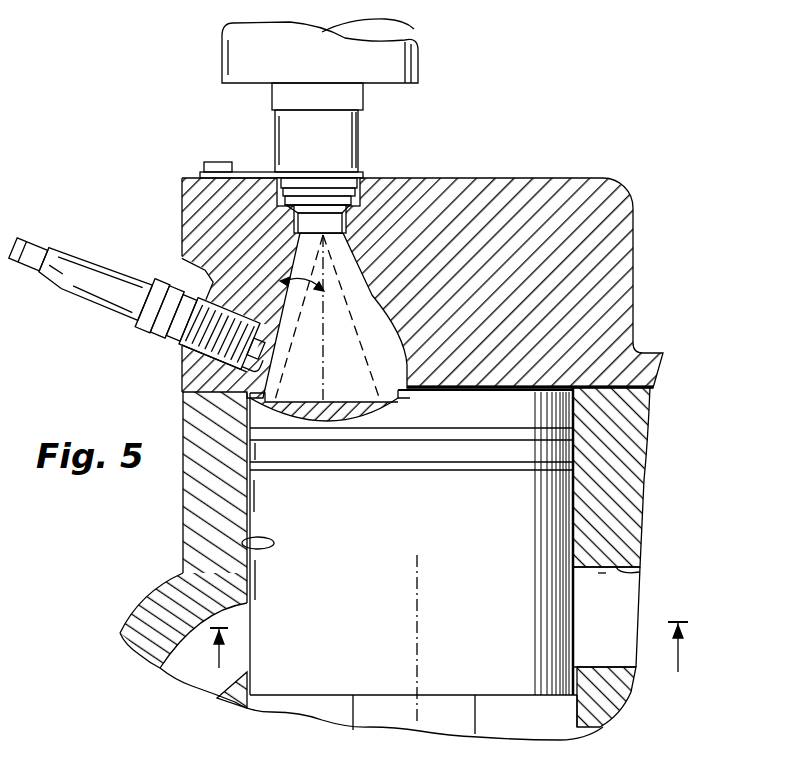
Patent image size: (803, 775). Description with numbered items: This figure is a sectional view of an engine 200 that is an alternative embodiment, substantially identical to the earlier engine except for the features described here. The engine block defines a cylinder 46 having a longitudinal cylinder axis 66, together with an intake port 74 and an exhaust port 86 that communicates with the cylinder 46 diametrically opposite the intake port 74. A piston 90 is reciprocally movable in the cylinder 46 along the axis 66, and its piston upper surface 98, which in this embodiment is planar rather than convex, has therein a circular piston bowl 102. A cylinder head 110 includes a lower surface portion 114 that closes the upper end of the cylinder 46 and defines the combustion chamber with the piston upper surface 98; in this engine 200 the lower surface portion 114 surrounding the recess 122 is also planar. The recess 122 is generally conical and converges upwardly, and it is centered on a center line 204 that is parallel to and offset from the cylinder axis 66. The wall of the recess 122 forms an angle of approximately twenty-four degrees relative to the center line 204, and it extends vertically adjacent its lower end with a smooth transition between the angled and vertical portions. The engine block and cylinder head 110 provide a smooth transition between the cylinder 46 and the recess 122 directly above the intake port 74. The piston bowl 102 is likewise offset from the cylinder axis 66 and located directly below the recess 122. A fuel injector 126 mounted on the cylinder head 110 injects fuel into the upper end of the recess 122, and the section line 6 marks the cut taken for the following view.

The engine 200 is at (652, 180).
The cylinder head 110 is at (623, 217).
The fuel injector 126 is at (418, 62).
The recess 122 is at (372, 292).
The center line of the recess 204 is at (328, 350).
The piston upper surface 98 is at (475, 386).
The cylinder head lower surface portion 114 is at (537, 392).
The piston bowl 102 is at (315, 398).
The intake port 74 is at (250, 609).
The cylinder axis 66 is at (387, 638).
The cylinder 46 is at (243, 543).
The exhaust port 86 is at (640, 572).
The piston 90 is at (540, 695).
The section line 6- 6 is at (445, 649).